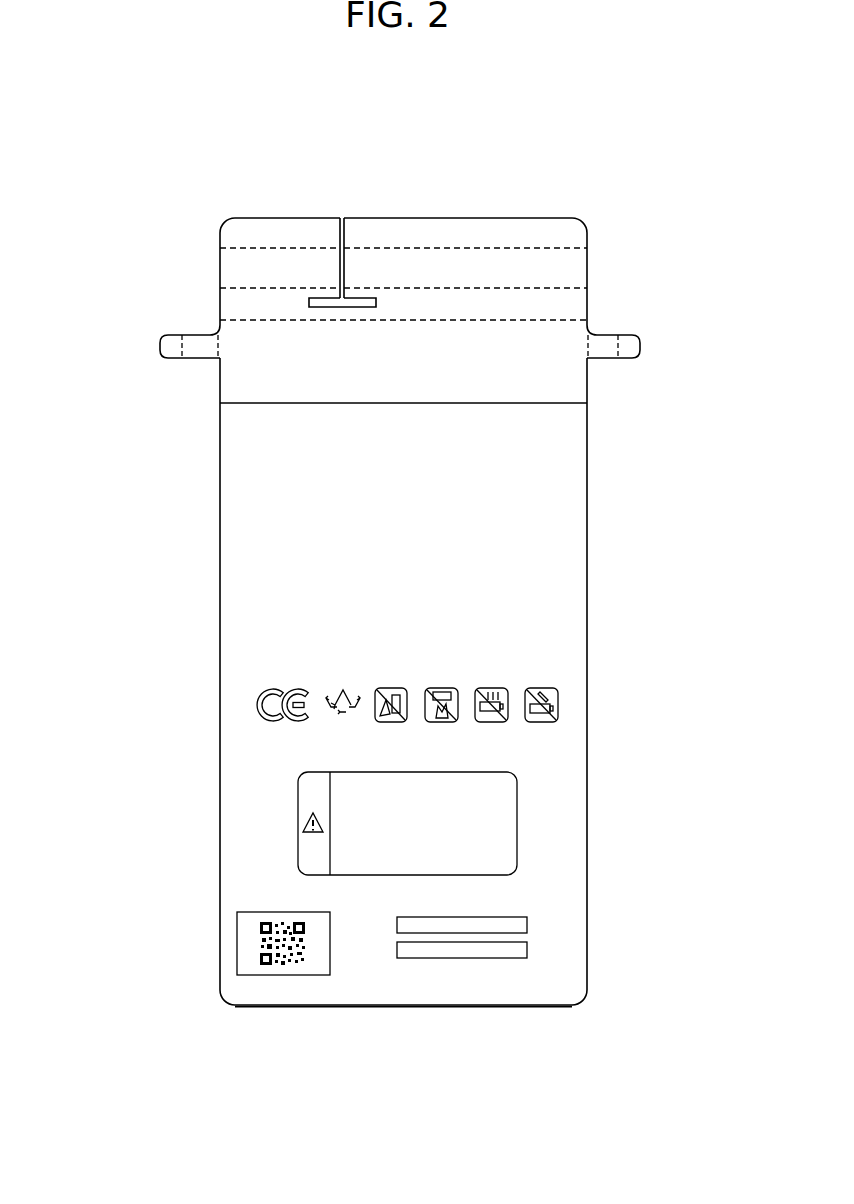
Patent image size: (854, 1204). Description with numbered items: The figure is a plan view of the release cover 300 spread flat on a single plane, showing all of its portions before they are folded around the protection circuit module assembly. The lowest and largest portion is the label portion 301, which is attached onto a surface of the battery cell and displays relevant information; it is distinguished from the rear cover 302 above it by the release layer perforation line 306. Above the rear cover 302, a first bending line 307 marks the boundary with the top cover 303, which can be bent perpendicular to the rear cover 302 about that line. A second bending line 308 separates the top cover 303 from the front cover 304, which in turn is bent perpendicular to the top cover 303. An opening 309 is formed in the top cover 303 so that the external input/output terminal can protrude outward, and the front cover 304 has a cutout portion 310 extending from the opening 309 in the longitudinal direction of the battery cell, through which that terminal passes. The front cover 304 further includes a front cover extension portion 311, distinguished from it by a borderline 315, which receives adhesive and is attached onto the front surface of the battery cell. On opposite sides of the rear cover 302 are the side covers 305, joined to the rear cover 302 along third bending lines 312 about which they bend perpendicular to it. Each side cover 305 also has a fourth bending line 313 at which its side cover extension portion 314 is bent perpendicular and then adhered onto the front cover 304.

The release cover 300 is at (98, 152).
The label portion 301 is at (567, 807).
The rear cover 302 is at (488, 370).
The top cover 303 is at (537, 305).
The front cover 304 is at (477, 273).
The side covers 305 is at (197, 342).
The release layer perforation line 306 is at (243, 405).
The first bending line 307 is at (565, 320).
The second bending line 308 is at (565, 290).
The opening 309 is at (325, 303).
The cutout portion 310 is at (345, 230).
The front cover extension portion 311 is at (413, 233).
The third bending lines 312 is at (187, 363).
The fourth bending lines 313 is at (165, 333).
The side cover extension portions 314 is at (168, 345).
The borderline 315 is at (565, 248).